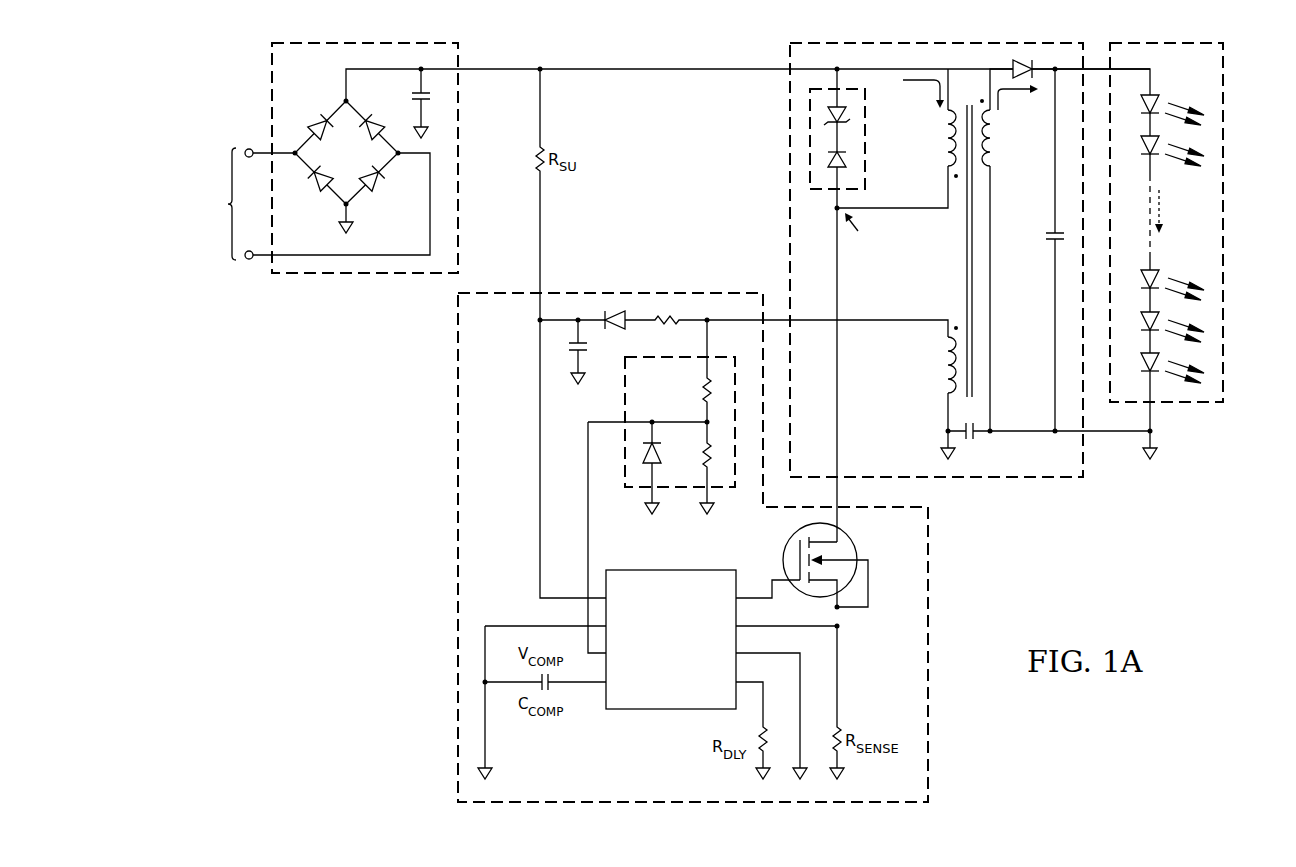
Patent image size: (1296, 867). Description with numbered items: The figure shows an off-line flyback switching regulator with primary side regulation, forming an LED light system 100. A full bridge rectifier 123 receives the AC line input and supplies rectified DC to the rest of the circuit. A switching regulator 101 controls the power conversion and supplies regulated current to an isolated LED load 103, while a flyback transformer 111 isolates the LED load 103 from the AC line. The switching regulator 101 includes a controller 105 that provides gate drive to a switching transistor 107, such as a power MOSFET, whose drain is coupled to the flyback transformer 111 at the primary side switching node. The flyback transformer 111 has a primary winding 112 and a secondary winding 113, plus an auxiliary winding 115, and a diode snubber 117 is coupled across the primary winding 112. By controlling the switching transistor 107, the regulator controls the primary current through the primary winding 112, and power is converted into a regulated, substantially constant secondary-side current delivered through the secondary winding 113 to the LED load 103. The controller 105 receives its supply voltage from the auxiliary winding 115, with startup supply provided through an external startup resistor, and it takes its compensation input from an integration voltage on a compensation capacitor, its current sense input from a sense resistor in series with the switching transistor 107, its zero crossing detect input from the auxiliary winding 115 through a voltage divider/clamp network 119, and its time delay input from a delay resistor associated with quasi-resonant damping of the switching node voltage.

The LED light system 100 is at (266, 626).
The switching regulator 101 is at (452, 559).
The LED load 103 is at (1230, 222).
The controller 105 is at (667, 710).
The switching transistor 107 is at (785, 549).
The flyback transformer 111 is at (1015, 484).
The primary winding 112 is at (949, 133).
The secondary winding 113 is at (990, 147).
The auxiliary winding 115 is at (953, 361).
The diode snubber 117 is at (872, 161).
The voltage divider/clamp network 119 is at (685, 398).
The full bridge rectifier 123 is at (266, 95).